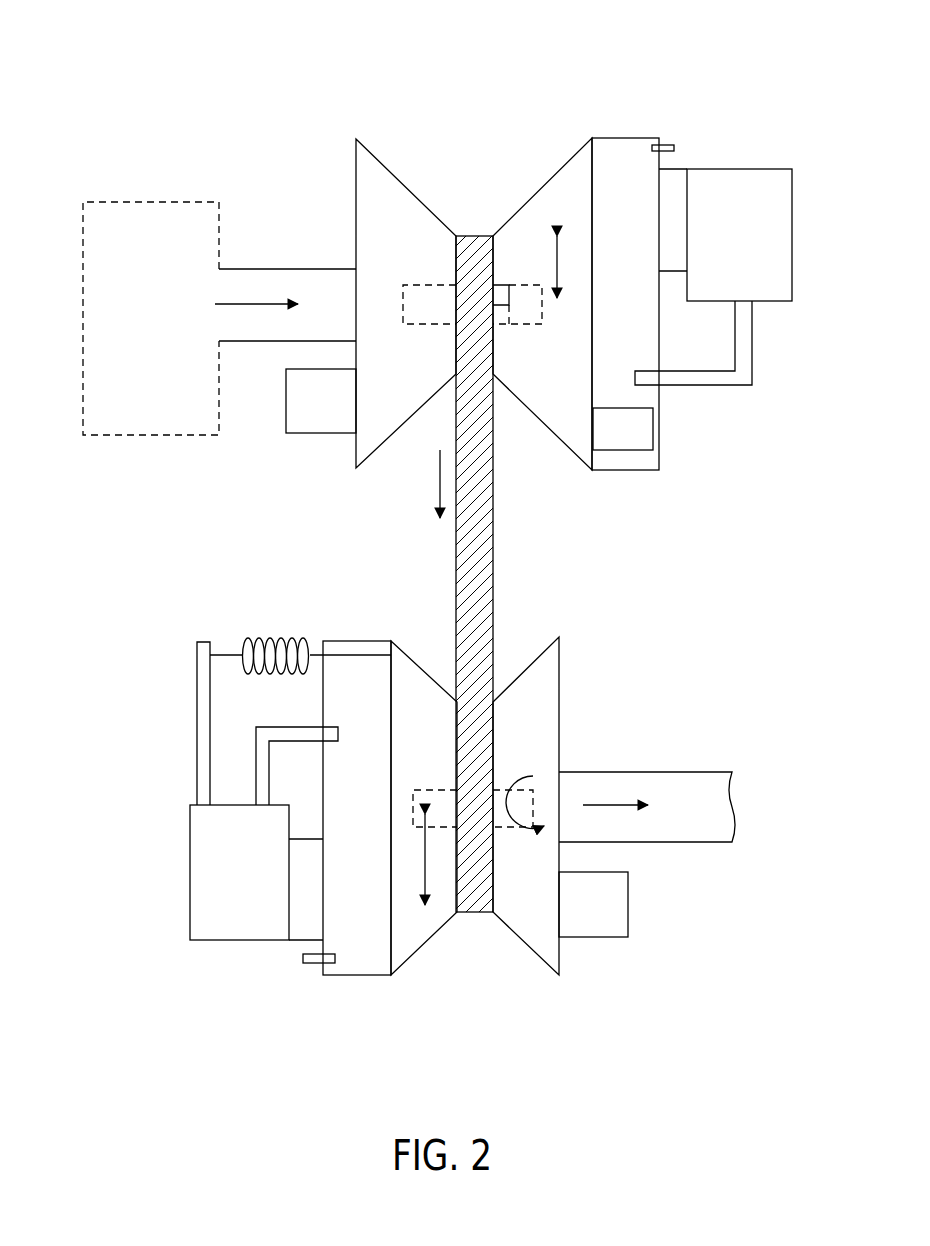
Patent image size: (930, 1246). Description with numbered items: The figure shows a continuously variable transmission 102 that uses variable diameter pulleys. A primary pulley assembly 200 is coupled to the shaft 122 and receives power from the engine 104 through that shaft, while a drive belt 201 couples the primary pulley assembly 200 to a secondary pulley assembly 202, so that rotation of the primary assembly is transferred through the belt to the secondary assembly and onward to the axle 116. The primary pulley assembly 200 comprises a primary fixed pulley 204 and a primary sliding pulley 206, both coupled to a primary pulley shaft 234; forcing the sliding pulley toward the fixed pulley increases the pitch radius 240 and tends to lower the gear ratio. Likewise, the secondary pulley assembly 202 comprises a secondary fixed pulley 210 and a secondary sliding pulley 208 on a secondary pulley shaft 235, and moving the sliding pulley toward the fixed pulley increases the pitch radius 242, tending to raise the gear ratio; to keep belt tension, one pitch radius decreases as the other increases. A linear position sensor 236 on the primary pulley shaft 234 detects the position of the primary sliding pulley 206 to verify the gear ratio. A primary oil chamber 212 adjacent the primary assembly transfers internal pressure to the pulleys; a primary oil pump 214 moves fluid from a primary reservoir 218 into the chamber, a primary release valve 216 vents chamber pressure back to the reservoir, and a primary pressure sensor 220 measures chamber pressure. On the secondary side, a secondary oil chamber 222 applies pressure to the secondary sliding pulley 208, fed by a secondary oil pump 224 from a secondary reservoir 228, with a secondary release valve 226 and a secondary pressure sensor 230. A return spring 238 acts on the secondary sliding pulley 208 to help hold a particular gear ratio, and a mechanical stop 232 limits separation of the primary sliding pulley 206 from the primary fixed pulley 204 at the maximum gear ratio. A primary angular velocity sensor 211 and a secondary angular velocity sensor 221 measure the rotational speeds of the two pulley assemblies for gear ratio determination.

The transmission 102 is at (170, 68).
The engine 104 is at (80, 370).
The axle 116 is at (683, 785).
The shaft 122 is at (254, 269).
The primary pulley assembly 200 is at (375, 122).
The drive belt 201 is at (457, 572).
The secondary pulley assembly 202 is at (578, 732).
The primary fixed pulley 204 is at (398, 185).
The primary sliding pulley 206 is at (540, 195).
The secondary sliding pulley 208 is at (408, 665).
The secondary fixed pulley 210 is at (540, 660).
The primary angular velocity sensor 211 is at (306, 433).
The primary oil chamber 212 is at (617, 140).
The primary oil pump 214 is at (678, 172).
The primary release valve 216 is at (647, 373).
The primary reservoir 218 is at (786, 235).
The primary pressure sensor 220 is at (665, 143).
The secondary angular velocity sensor 221 is at (620, 900).
The secondary oil chamber 222 is at (357, 973).
The secondary oil pump 224 is at (296, 938).
The secondary release valve 226 is at (330, 727).
The secondary reservoir 228 is at (198, 845).
The secondary pressure sensor 230 is at (320, 963).
The mechanical stop 232 is at (645, 428).
The primary pulley shaft 234 is at (542, 323).
The secondary pulley shaft 235 is at (512, 830).
The linear position sensor 236 is at (505, 307).
The return spring 238 is at (293, 638).
The pitch radius 240 is at (557, 265).
The pitch radius 242 is at (425, 863).